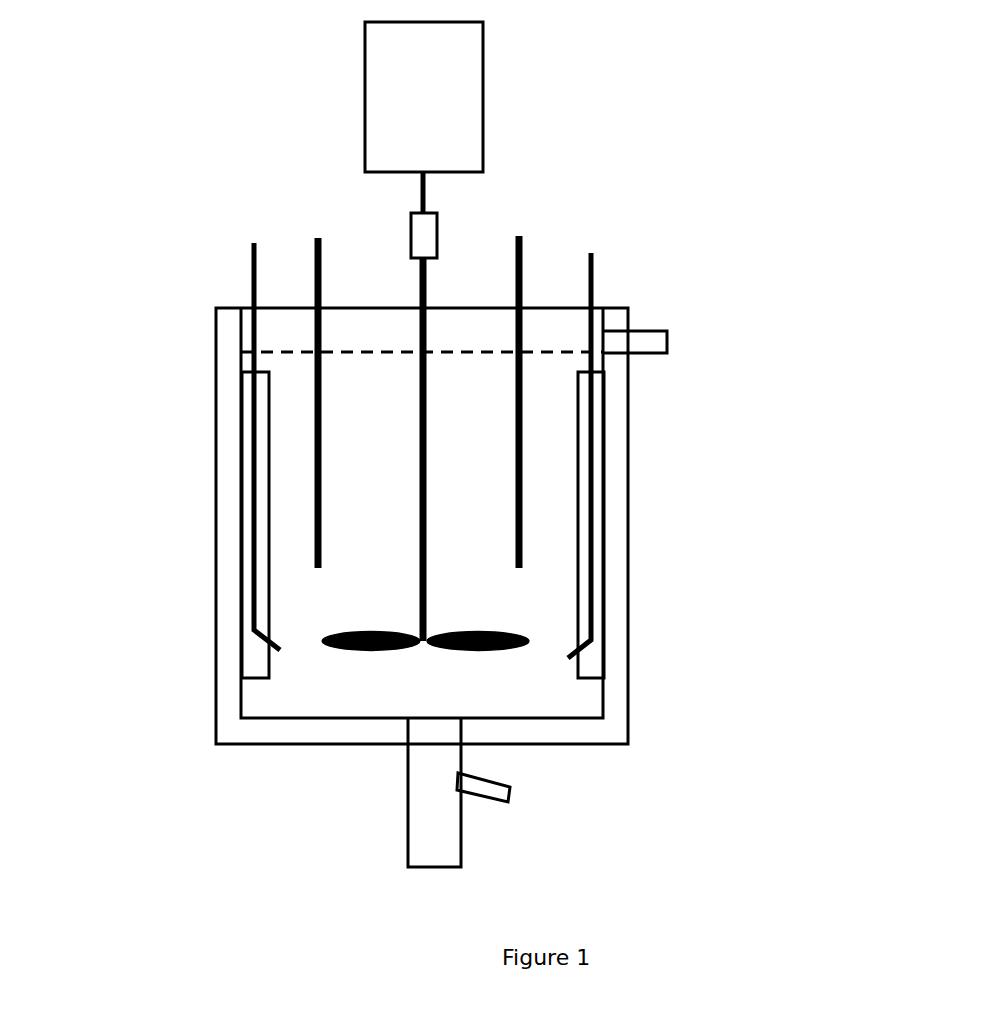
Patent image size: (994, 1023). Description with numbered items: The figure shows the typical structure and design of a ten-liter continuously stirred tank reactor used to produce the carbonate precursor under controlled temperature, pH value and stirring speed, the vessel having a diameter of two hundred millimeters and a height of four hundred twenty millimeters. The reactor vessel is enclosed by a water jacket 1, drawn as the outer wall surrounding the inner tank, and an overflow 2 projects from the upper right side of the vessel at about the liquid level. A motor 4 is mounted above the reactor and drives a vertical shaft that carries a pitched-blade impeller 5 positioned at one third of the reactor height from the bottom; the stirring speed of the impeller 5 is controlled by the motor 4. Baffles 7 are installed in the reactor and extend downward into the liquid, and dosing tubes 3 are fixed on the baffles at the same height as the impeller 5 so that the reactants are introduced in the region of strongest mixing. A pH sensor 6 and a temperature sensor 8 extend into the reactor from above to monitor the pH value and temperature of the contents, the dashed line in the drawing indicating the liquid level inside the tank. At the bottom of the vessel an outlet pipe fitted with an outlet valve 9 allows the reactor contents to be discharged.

The water jacket 1 is at (615, 523).
The overflow 2 is at (660, 339).
The dosing tube 3 is at (602, 248).
The motor 4 is at (468, 93).
The impeller 5 is at (345, 633).
The pH sensor 6 is at (315, 505).
The baffle 7 is at (245, 400).
The temperature sensor 8 is at (500, 395).
The outlet valve 9 is at (440, 797).